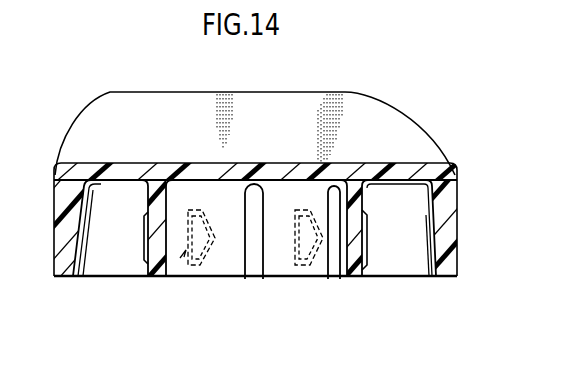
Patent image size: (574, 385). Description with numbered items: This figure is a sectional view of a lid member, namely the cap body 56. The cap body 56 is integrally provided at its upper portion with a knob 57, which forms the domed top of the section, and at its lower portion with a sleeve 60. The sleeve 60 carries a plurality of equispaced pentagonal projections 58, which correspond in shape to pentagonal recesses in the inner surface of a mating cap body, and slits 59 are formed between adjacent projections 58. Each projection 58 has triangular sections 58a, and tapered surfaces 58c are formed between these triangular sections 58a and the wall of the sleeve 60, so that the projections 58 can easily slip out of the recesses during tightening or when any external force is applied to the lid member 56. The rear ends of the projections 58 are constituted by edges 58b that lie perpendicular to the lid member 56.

The cap body 56 is at (118, 100).
The knob 57 is at (200, 92).
The pentagonal projections 58 is at (168, 281).
The triangular sections 58a is at (208, 244).
The edges 58b is at (186, 251).
The tapered surfaces 58c is at (194, 266).
The slits 59 is at (252, 270).
The sleeve 60 is at (362, 266).